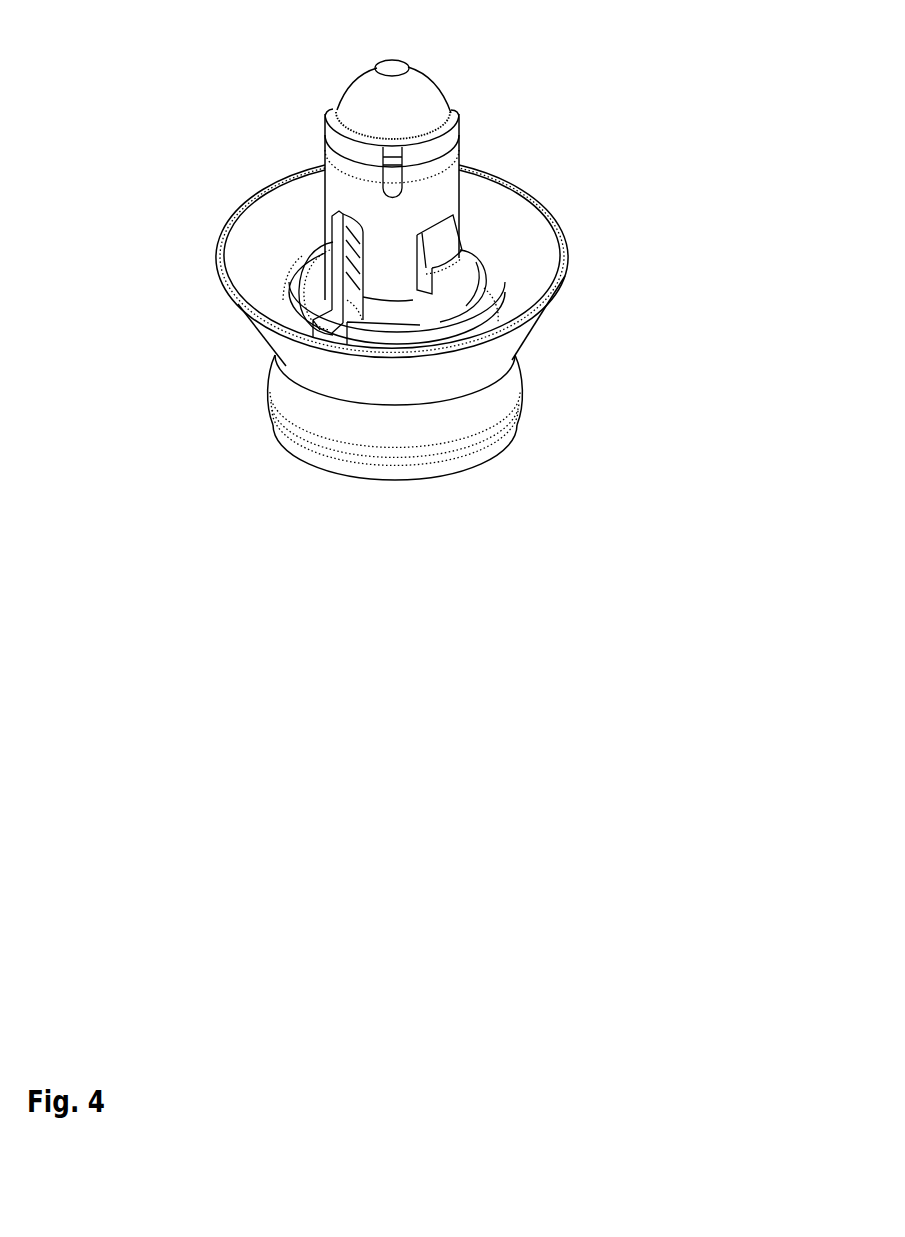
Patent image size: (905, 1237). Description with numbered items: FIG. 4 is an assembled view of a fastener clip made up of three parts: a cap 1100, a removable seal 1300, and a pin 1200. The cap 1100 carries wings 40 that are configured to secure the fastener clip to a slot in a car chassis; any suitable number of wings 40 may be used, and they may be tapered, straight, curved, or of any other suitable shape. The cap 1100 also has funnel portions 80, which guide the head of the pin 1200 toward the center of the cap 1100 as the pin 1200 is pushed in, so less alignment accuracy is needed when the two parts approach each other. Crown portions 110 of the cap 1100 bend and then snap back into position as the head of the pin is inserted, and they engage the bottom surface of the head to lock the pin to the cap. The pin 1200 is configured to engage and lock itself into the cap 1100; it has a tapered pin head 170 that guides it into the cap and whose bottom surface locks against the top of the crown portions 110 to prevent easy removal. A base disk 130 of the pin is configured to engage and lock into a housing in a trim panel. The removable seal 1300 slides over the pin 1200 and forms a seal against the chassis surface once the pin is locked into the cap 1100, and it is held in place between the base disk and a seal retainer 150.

The wing 40 is at (497, 254).
The funnel portion 80 is at (240, 293).
The crown portion 110 is at (345, 150).
The base disk 130 is at (315, 428).
The seal retainer 150 is at (356, 274).
The pin head 170 is at (433, 95).
The cap 1100 is at (658, 106).
The pin 1200 is at (688, 360).
The seal 1300 is at (562, 276).